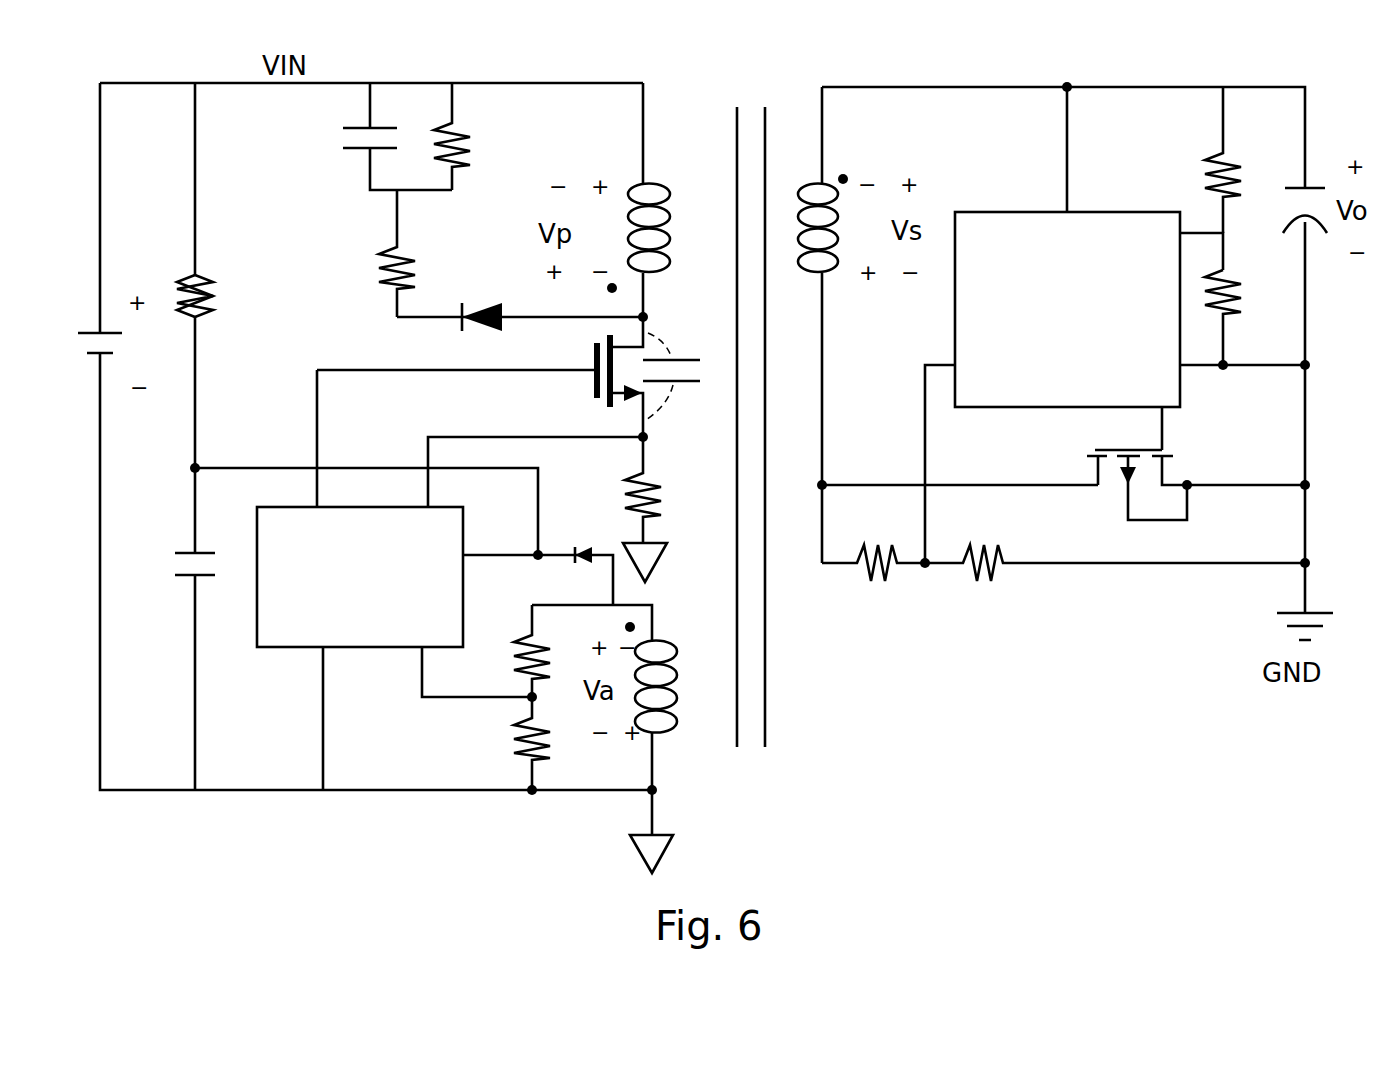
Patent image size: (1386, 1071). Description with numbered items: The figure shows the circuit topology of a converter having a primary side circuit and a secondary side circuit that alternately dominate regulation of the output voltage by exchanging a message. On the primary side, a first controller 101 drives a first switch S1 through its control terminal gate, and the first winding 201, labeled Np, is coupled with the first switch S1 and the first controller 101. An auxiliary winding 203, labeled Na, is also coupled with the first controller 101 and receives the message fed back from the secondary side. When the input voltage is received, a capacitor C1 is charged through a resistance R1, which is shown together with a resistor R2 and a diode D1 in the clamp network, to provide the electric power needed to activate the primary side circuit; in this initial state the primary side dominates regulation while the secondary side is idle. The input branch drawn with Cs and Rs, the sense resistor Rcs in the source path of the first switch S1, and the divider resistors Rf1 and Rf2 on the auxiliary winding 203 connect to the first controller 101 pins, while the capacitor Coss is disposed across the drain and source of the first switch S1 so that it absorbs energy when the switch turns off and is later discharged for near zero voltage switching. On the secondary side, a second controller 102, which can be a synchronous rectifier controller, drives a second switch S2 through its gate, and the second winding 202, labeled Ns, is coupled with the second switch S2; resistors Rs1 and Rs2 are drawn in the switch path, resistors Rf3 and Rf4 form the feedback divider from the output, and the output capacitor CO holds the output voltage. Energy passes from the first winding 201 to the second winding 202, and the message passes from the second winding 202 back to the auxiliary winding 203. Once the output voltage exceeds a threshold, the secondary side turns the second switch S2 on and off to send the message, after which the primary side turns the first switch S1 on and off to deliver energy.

The first controller 101 is at (285, 647).
The second controller 102 is at (993, 212).
The first winding 201 is at (660, 173).
The second winding 202 is at (810, 296).
The auxiliary winding 203 is at (655, 709).
The first switch S1 is at (572, 390).
The second switch S2 is at (1119, 538).
The capacitor Coss is at (670, 357).
The clamp diode D1 is at (520, 298).
The capacitor C1 is at (376, 136).
The resistance R1 is at (413, 253).
The clamp resistor R2 is at (463, 136).
The input snubber resistor Cs is at (218, 296).
The input capacitor Rs is at (205, 583).
The current sense resistor Rcs is at (616, 509).
The feedback resistor Rf1 is at (502, 651).
The feedback resistor Rf2 is at (502, 743).
The output feedback resistor Rf3 is at (1245, 160).
The output feedback resistor Rf4 is at (1245, 317).
The output capacitor CO is at (1288, 228).
The sense resistor Rs1 is at (873, 552).
The sense resistor Rs2 is at (1115, 552).
The primary winding Np is at (683, 63).
The secondary winding Ns is at (815, 325).
The auxiliary winding Na is at (612, 695).